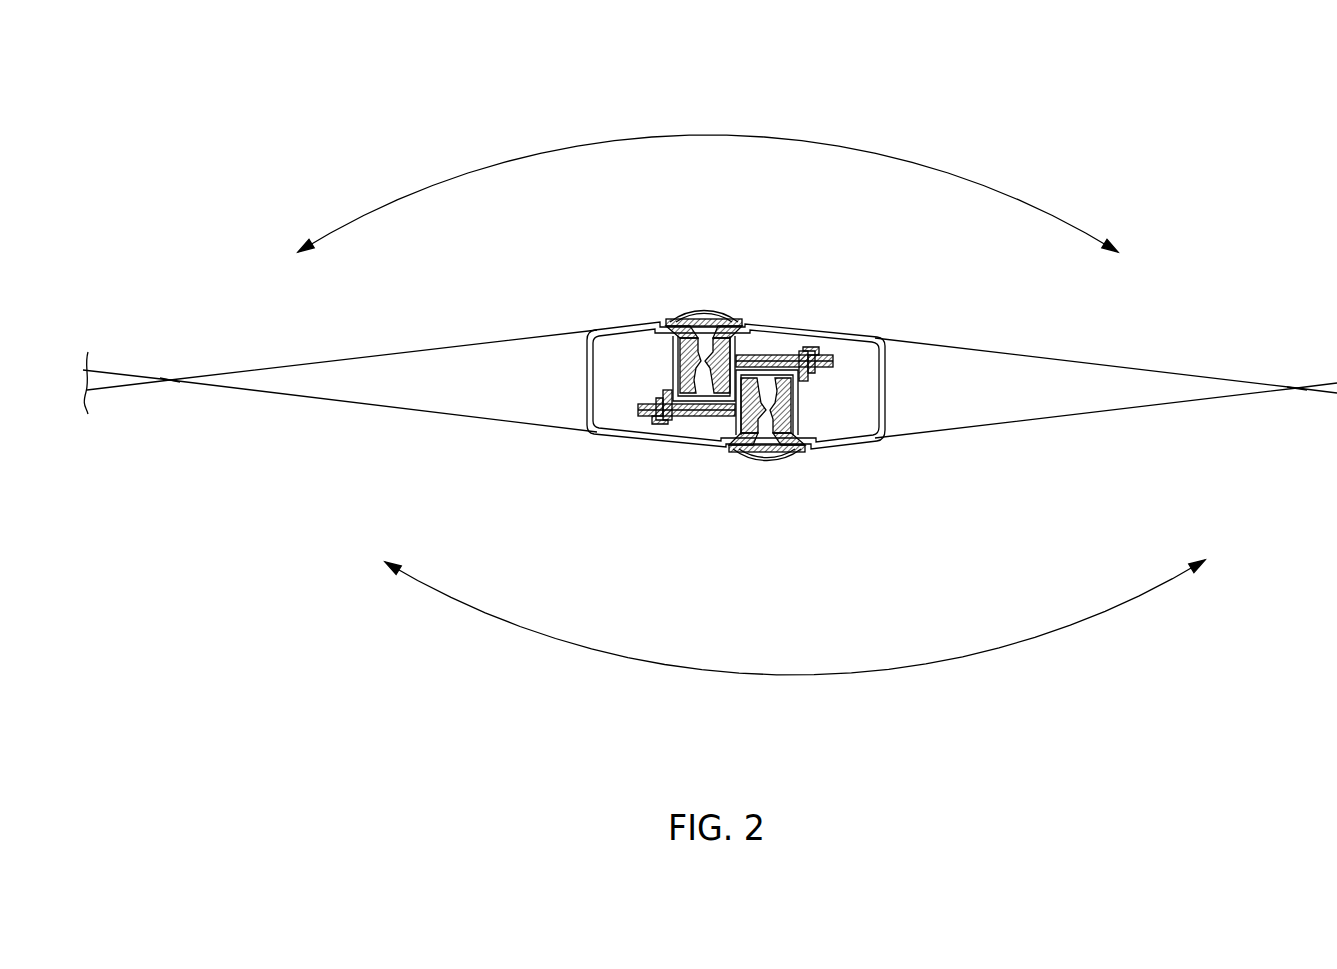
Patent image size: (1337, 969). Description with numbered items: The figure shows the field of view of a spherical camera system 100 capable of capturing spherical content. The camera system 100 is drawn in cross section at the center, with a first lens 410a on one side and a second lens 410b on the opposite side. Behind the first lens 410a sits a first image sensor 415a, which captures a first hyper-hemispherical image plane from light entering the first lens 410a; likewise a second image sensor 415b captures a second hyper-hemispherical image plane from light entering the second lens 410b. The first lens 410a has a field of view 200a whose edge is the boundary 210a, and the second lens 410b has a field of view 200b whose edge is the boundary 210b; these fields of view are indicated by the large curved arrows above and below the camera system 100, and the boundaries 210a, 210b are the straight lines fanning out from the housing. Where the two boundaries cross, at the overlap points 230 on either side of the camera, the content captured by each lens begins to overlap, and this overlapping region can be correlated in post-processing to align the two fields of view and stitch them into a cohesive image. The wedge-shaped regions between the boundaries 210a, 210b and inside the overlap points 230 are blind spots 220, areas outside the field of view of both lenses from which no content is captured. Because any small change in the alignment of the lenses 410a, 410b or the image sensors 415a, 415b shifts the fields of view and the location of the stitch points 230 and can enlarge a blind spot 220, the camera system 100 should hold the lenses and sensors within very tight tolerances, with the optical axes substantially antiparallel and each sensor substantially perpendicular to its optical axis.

The spherical camera system 100 is at (590, 395).
The field of view of the first lens 200a is at (781, 136).
The field of view of the second lens 200b is at (795, 676).
The boundary of first field of view 210a is at (383, 353).
The boundary of second field of view 210b is at (428, 412).
The blind spot 220 is at (722, 384).
The overlap point 230 is at (170, 382).
The first lens 410a is at (703, 309).
The second lens 410b is at (772, 458).
The first image sensor 415a is at (708, 405).
The second image sensor 415b is at (768, 358).